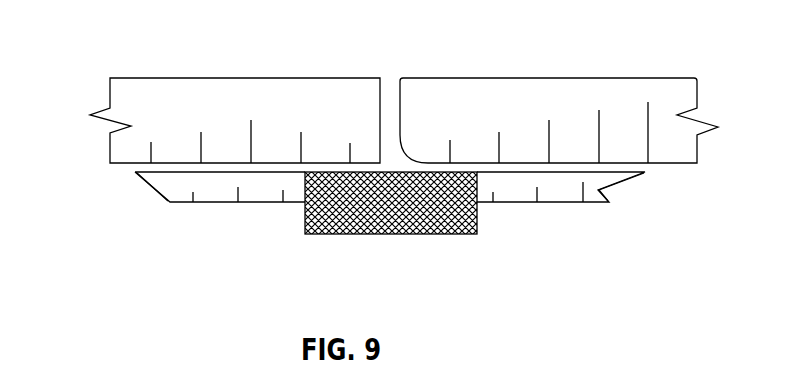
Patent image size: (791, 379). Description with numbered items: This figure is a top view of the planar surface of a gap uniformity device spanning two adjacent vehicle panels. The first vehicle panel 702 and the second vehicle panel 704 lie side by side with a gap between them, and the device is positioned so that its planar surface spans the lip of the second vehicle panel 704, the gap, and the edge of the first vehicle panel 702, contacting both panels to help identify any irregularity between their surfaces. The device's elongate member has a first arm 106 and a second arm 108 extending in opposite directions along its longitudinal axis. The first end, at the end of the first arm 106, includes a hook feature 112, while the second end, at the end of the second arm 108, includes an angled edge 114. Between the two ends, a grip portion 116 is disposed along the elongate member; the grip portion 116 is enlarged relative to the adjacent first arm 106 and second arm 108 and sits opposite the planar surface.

The second vehicle panel 704 is at (272, 92).
The first vehicle panel 702 is at (534, 87).
The second arm 108 is at (252, 203).
The first arm 106 is at (557, 203).
The angled edge 114 is at (153, 187).
The hook feature 112 is at (636, 194).
The grip portion 116 is at (377, 235).